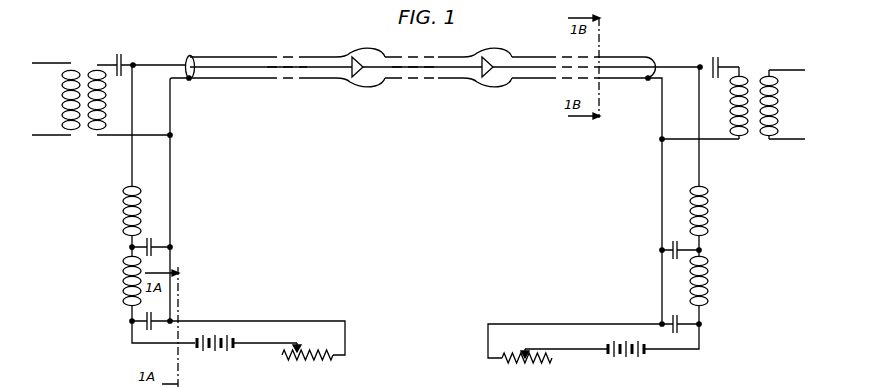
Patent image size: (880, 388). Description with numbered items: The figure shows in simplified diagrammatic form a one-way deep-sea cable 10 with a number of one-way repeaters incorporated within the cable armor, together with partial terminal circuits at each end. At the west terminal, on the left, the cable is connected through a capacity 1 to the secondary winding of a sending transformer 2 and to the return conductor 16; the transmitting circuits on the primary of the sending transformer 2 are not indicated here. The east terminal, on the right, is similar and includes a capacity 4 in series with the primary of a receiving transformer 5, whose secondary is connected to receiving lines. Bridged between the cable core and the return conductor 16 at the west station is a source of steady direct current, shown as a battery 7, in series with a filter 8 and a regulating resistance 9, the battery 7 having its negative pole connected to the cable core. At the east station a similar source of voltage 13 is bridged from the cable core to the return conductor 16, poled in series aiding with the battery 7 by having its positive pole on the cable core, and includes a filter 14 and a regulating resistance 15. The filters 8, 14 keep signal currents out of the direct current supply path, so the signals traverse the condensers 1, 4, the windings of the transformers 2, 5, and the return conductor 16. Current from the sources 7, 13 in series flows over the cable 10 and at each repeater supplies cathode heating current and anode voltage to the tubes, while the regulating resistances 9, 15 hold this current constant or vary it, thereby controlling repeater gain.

The capacity 1 is at (119, 52).
The sending transformer 2 is at (84, 66).
The capacity 4 is at (718, 60).
The receiving transformer 5 is at (752, 75).
The battery 7 is at (217, 357).
The filter 8 is at (122, 247).
The regulating resistance 9 is at (305, 363).
The deep-sea cable 10 is at (240, 56).
The source of voltage 13 is at (626, 362).
The filter 14 is at (708, 250).
The regulating resistance 15 is at (521, 364).
The return conductor 16 is at (193, 80).